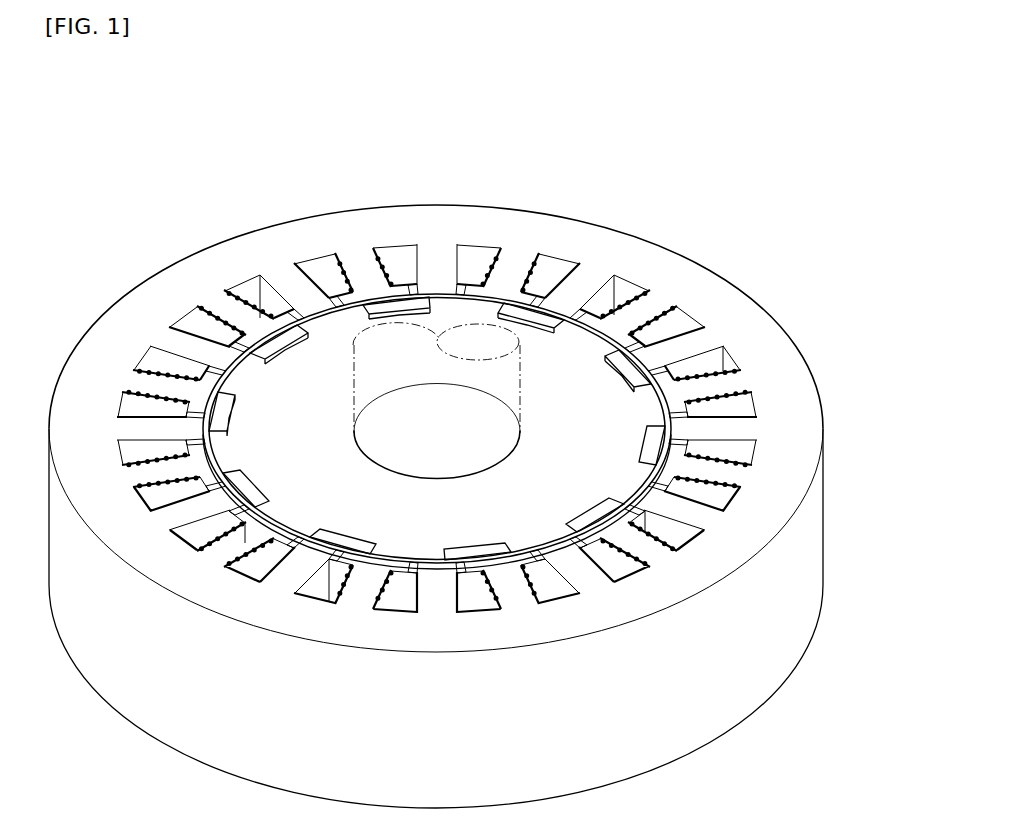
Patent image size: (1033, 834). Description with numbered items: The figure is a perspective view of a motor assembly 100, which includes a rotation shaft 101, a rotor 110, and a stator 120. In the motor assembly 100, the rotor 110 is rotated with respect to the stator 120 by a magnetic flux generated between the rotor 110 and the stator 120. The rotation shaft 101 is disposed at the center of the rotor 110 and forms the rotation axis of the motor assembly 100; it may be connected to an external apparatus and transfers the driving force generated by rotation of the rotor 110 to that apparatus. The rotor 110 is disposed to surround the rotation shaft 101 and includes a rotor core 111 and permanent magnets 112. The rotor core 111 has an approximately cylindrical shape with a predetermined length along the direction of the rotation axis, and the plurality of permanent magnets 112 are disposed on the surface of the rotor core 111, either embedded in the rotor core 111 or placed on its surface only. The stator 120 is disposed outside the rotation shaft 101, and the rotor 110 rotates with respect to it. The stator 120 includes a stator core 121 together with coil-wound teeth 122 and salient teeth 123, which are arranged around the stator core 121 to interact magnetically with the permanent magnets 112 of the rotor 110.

The motor assembly 100 is at (752, 137).
The rotation shaft 101 is at (352, 352).
The rotor 110 is at (212, 180).
The rotor core 111 is at (253, 390).
The permanent magnet 112 is at (270, 342).
The stator 120 is at (684, 281).
The stator core 121 is at (473, 227).
The coil-wound teeth 122 is at (517, 273).
The salient teeth 123 is at (578, 290).